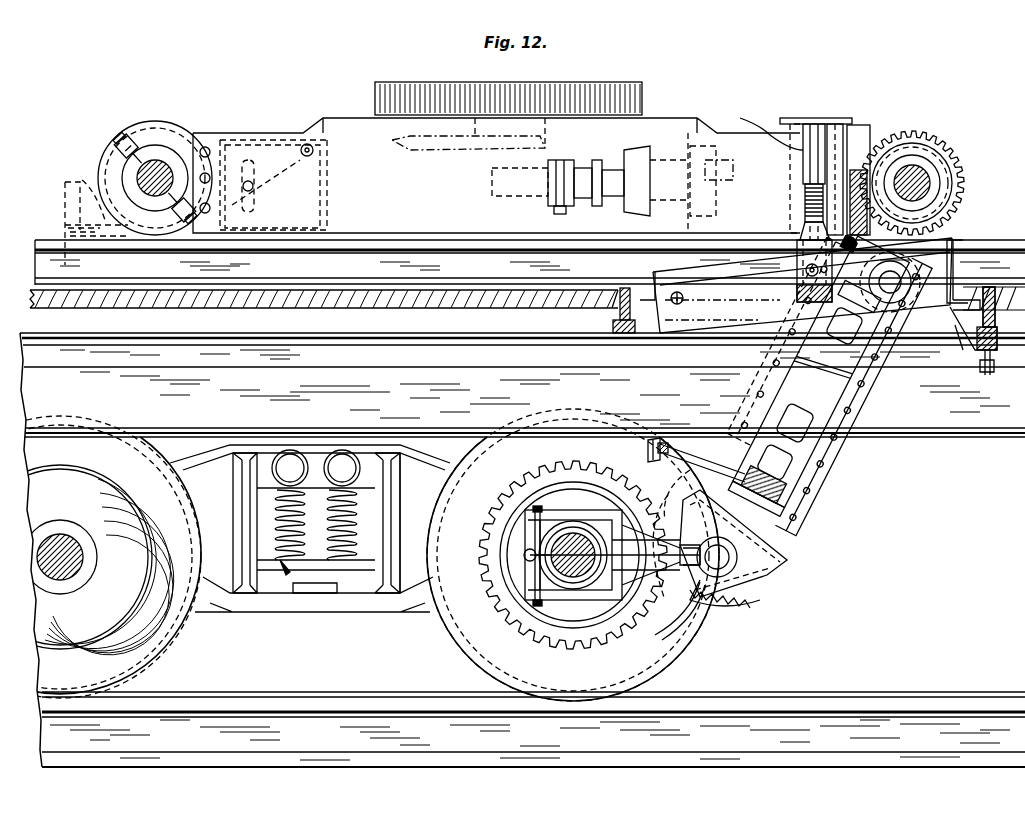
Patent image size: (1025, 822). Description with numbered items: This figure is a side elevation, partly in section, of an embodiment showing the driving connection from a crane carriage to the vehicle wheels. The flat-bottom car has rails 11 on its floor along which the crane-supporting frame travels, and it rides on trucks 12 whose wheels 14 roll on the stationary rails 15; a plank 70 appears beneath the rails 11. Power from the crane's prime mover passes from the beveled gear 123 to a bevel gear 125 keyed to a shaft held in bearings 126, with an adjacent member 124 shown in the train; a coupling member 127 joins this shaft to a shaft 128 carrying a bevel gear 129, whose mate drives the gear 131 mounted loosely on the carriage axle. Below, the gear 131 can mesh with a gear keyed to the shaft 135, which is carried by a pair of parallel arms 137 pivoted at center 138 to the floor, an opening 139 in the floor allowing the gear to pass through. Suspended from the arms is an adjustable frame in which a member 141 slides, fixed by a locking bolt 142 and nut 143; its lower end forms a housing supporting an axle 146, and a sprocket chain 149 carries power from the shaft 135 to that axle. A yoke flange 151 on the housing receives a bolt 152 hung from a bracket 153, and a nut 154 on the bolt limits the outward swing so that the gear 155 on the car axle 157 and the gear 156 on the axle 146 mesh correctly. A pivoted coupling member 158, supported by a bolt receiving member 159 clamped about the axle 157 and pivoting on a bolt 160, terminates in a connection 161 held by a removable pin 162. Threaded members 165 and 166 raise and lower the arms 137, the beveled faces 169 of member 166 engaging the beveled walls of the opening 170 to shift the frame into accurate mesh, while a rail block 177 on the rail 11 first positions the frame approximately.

The rails 11 is at (530, 262).
The trucks 12 is at (330, 605).
The wheels 14 is at (359, 555).
The stationary rails 15 is at (378, 723).
The plank 70 is at (254, 292).
The beveled gear 123 is at (475, 146).
The tapered coupling 124 is at (632, 150).
The bevel gear 125 is at (628, 168).
The bearings 126 is at (548, 198).
The coupling member 127 is at (760, 135).
The shaft 128 is at (836, 122).
The bevel gear 129 is at (858, 150).
The gear 131 is at (968, 206).
The shaft 135 is at (905, 278).
The arms 137 is at (802, 285).
The pivot center 138 is at (683, 298).
The opening 139 is at (650, 300).
The member 141 is at (830, 452).
The locking bolt 142 is at (868, 375).
The nut 143 is at (785, 360).
The axle 146 is at (765, 578).
The sprocket chain 149 is at (788, 540).
The flange 151 is at (800, 488).
The bolt 152 is at (716, 470).
The bracket 153 is at (680, 445).
The nut 154 is at (793, 505).
The gear 155 is at (618, 628).
The gear 156 is at (748, 605).
The axle 157 is at (535, 520).
The coupling member 158 is at (575, 520).
The bolt receiving member 159 is at (535, 575).
The bolt 160 is at (540, 510).
The connection 161 is at (688, 600).
The pin 162 is at (683, 510).
The threaded member 165 is at (771, 126).
The threaded member 166 is at (805, 205).
The beveled faces 169 is at (803, 228).
The opening 170 is at (797, 262).
The rail block 177 is at (65, 218).